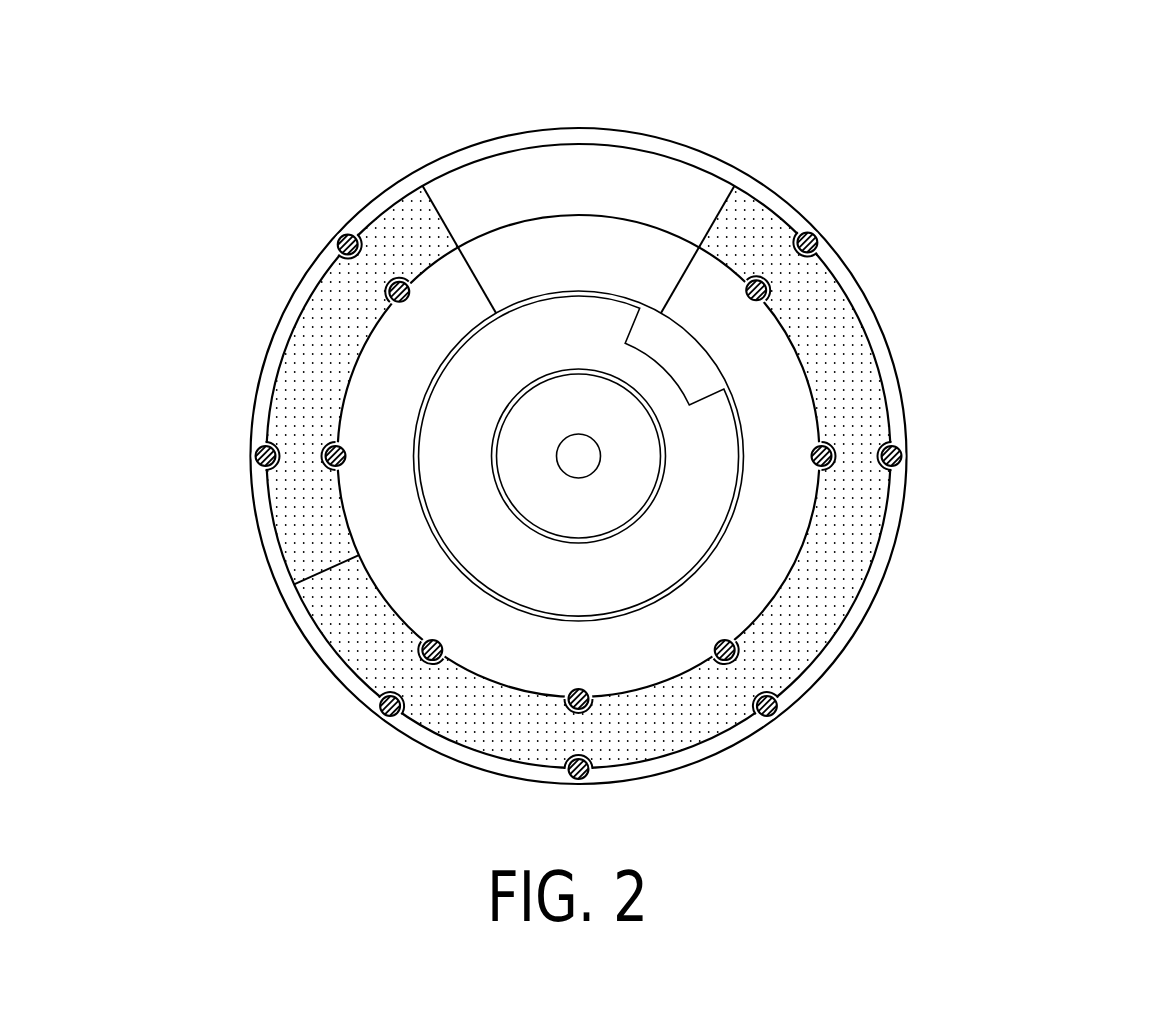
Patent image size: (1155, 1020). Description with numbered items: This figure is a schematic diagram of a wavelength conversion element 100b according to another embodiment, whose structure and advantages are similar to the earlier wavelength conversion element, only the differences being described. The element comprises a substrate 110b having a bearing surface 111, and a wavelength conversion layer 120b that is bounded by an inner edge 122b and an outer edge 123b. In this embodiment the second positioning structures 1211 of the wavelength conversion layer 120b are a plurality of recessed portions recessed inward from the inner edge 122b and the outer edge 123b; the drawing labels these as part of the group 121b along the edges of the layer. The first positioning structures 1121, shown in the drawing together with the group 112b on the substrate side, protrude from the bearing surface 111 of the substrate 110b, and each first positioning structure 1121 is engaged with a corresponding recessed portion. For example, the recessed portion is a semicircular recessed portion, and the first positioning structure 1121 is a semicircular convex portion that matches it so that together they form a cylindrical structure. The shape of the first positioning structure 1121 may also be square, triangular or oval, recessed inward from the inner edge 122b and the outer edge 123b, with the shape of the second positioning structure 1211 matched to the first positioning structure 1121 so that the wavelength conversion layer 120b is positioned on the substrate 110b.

The wavelength conversion element 100b is at (175, 170).
The substrate 110b is at (612, 125).
The wavelength conversion layer 120b is at (665, 466).
The inner edge 122b is at (810, 373).
The outer edge 123b is at (770, 204).
The outer fastening holes 112b is at (700, 506).
The first positioning structure 1121 is at (822, 240).
The inner fastening holes 121b is at (735, 495).
The second positioning structure 1211 is at (772, 283).
The bearing surface 111 is at (753, 557).